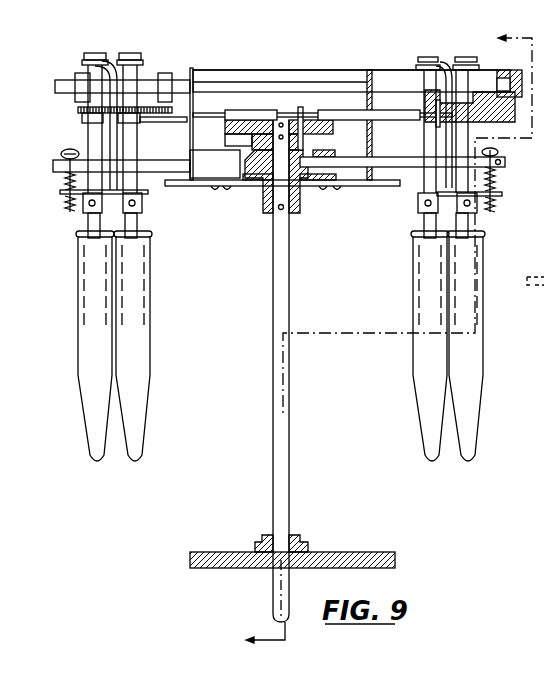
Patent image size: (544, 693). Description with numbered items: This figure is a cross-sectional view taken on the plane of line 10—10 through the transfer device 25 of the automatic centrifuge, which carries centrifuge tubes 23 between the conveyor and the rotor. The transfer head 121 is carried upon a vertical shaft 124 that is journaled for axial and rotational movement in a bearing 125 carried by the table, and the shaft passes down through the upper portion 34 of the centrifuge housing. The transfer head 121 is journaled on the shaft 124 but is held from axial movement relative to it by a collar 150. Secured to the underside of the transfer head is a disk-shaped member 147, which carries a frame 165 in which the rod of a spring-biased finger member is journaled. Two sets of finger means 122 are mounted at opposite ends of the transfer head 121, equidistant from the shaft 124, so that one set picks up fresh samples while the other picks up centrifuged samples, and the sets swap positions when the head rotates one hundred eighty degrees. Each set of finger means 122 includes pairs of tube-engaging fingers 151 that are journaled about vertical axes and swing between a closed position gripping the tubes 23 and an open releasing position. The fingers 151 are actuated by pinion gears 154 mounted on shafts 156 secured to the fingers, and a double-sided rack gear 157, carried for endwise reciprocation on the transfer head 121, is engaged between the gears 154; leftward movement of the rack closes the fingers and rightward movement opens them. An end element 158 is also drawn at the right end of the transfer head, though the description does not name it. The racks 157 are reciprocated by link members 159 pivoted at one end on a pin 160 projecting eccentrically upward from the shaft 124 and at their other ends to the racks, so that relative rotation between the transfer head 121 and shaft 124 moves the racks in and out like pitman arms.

The section line 10 is at (379, 341).
The centrifuge tubes 23 is at (122, 283).
The transfer device 25 is at (250, 62).
The upper portion of housing 34 is at (330, 552).
The transfer head 121 is at (339, 69).
The finger means 122 is at (76, 220).
The vertical shaft 124 is at (273, 263).
The bearing 125 is at (268, 534).
The disk-shaped member 147 is at (180, 184).
The collar 150 is at (262, 208).
The tube-engaging fingers 151 is at (93, 233).
The pinion gears 154 is at (82, 107).
The shafts 156 is at (92, 142).
The double-sided rack gear 157 is at (500, 124).
The end block 158 is at (400, 80).
The link members 159 is at (200, 113).
The pin 160 is at (300, 107).
The frame 165 is at (372, 128).